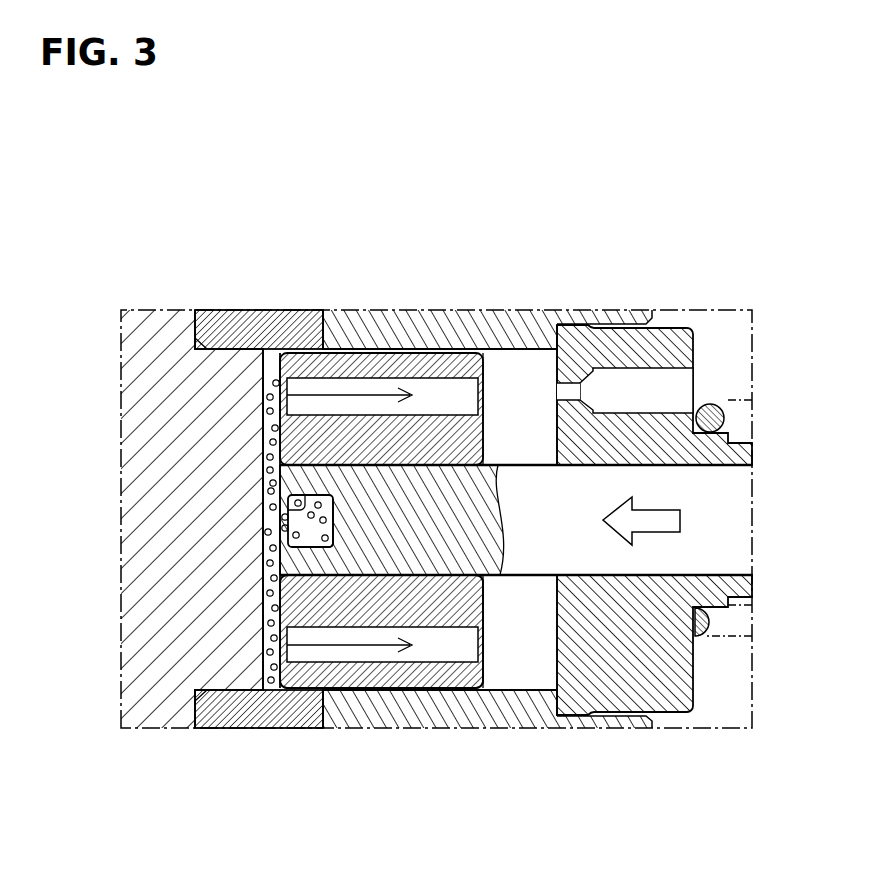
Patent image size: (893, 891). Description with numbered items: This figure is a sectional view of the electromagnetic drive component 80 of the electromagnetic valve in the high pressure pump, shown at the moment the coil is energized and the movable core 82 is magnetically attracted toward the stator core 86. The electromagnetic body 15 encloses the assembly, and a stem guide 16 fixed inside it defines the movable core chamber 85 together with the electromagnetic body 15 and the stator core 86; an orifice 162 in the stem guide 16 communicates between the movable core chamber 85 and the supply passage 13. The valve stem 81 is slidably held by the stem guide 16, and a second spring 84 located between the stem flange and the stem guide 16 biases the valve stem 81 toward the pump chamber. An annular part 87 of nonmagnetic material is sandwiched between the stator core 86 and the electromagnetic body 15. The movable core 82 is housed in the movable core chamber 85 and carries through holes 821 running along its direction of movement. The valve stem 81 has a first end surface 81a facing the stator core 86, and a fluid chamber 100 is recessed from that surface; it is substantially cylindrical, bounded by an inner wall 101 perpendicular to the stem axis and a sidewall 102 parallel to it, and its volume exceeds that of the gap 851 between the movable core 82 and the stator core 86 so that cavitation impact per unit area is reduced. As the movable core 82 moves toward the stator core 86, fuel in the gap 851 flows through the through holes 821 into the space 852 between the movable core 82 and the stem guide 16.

The electromagnetic drive component 80 is at (656, 229).
The supply passage 13 is at (729, 348).
The electromagnetic body 15 is at (378, 330).
The stem guide 16 is at (660, 648).
The valve stem 81 is at (702, 548).
The first end surface 81a is at (270, 476).
The movable core 82 is at (347, 690).
The through holes 821 is at (466, 380).
The second spring 84 is at (728, 400).
The movable core chamber 85 is at (517, 385).
The space 852 is at (515, 640).
The gap 851 is at (268, 573).
The stator core 86 is at (160, 424).
The annular part 87 is at (255, 330).
The fluid chamber 100 is at (298, 522).
The inner wall 101 is at (330, 528).
The sidewall 102 is at (290, 508).
The orifice 162 is at (571, 392).